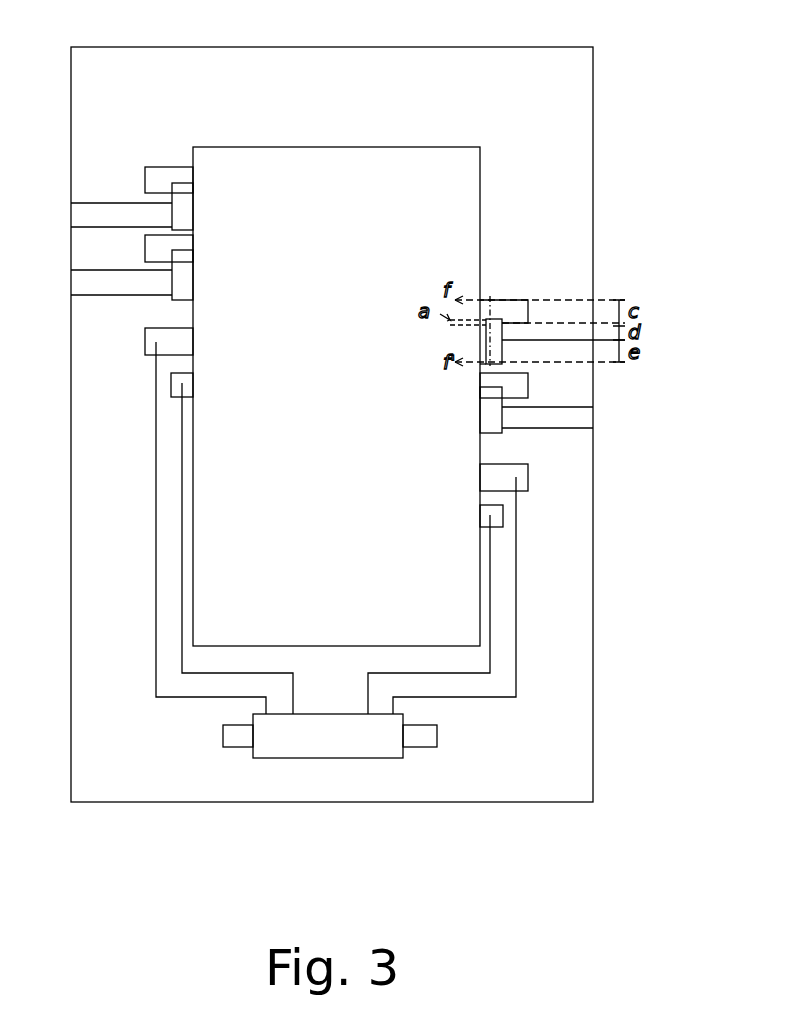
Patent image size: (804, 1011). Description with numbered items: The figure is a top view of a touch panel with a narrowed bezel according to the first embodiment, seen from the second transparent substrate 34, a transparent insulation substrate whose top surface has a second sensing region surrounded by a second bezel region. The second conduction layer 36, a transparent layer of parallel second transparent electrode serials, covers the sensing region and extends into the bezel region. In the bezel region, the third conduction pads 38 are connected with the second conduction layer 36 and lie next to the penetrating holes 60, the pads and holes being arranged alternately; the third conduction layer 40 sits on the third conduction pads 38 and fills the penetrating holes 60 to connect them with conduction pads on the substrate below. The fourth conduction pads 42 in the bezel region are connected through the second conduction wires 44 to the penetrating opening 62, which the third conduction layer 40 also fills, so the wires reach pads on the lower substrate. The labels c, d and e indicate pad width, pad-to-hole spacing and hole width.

The second transparent substrate 34 is at (177, 58).
The second conduction layer 36 is at (303, 213).
The third conduction pads 38 is at (508, 305).
The third conduction layer 40 is at (485, 343).
The fourth conduction pads 42 is at (525, 480).
The second conduction wires 44 is at (517, 647).
The penetrating holes 60 is at (570, 352).
The penetrating opening 62 is at (430, 730).